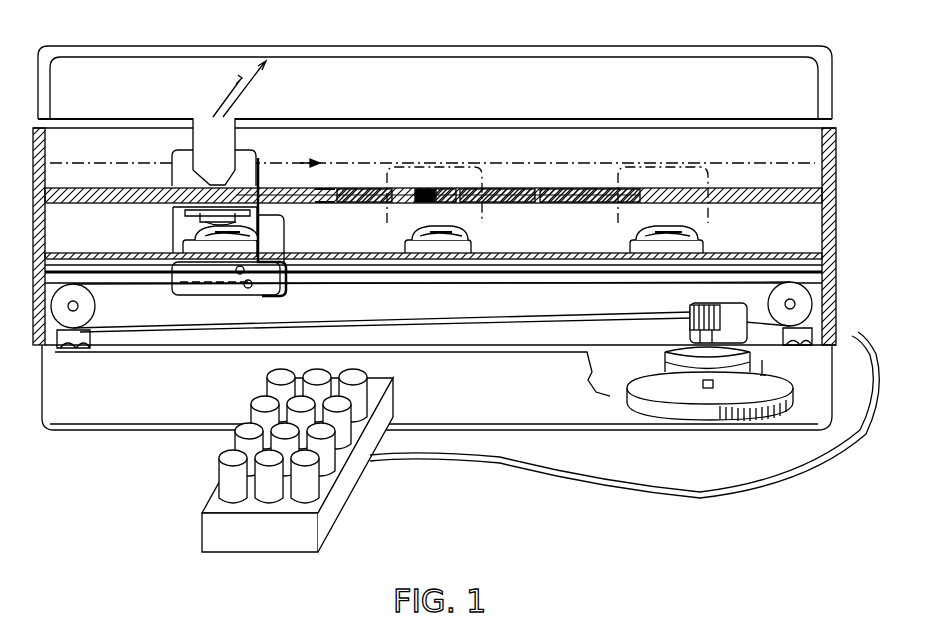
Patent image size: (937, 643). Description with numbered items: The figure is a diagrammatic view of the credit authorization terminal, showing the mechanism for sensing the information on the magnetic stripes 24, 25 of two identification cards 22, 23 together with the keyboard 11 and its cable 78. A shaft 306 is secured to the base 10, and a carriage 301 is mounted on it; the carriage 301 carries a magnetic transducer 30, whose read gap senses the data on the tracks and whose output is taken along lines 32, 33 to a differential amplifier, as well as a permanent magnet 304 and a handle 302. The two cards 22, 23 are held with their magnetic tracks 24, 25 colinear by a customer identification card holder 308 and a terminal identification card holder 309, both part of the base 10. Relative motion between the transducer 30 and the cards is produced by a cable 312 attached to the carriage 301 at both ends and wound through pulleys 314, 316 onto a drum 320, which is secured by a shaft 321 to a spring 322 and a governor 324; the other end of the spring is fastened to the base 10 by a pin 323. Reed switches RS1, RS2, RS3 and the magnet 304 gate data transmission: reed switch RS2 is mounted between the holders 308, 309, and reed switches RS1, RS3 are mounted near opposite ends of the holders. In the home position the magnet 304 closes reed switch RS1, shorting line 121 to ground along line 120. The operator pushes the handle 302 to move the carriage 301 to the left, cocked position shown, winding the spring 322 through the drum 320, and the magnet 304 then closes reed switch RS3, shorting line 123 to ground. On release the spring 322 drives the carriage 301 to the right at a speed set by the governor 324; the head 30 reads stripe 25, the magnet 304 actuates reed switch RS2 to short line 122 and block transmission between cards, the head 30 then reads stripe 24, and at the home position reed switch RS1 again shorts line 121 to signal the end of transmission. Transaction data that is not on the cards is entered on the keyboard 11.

The base 10 is at (514, 47).
The keyboard 11 is at (355, 500).
The identification card 22 is at (550, 190).
The identification card 23 is at (356, 191).
The magnetic stripe 24 is at (506, 190).
The magnetic stripe 25 is at (322, 192).
The magnetic transducer 30 is at (236, 145).
The line 32 is at (228, 89).
The line 33 is at (246, 85).
The cable 78 is at (498, 460).
The line 120 is at (183, 247).
The line 121 is at (705, 246).
The line 122 is at (476, 242).
The line 123 is at (262, 240).
The carriage 301 is at (180, 157).
The handle 302 is at (262, 177).
The permanent magnet 304 is at (198, 222).
The shaft 306 is at (338, 288).
The customer identification card holder 308 is at (428, 190).
The terminal identification card holder 309 is at (446, 190).
The cable 312 is at (130, 290).
The pulley 314 is at (90, 316).
The pulley 316 is at (812, 304).
The drum 320 is at (690, 328).
The shaft 321 is at (714, 386).
The spring 322 is at (662, 366).
The pin 323 is at (764, 372).
The governor 324 is at (640, 396).
The reed switch RS1 is at (668, 234).
The reed switch RS2 is at (428, 234).
The reed switch RS3 is at (185, 237).